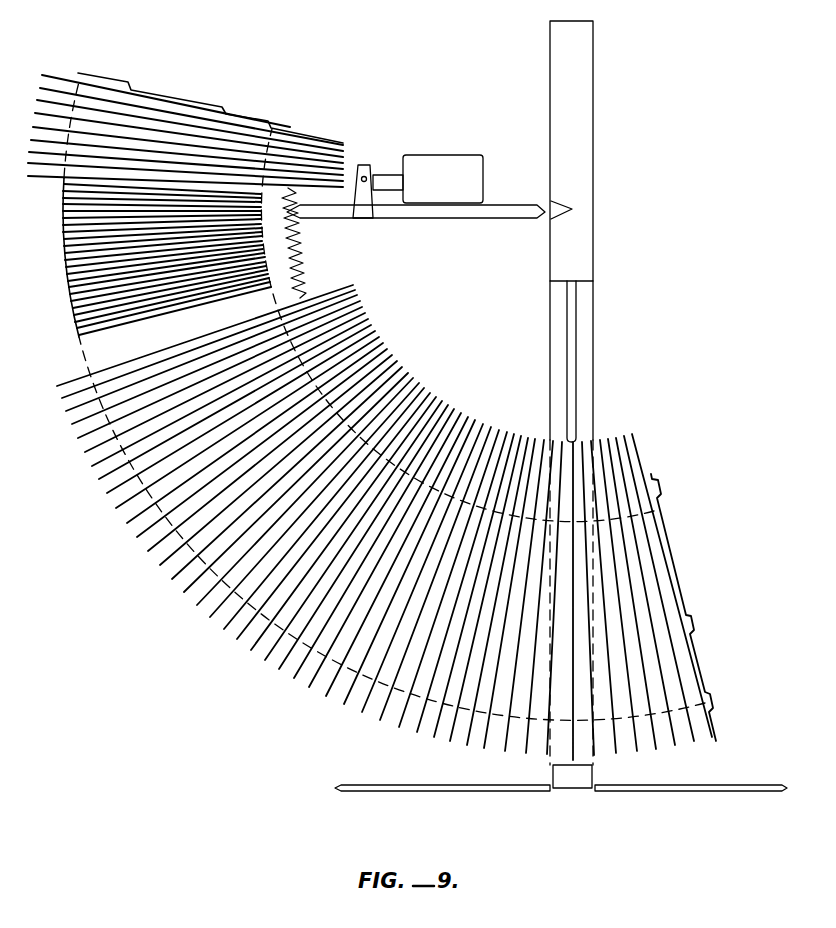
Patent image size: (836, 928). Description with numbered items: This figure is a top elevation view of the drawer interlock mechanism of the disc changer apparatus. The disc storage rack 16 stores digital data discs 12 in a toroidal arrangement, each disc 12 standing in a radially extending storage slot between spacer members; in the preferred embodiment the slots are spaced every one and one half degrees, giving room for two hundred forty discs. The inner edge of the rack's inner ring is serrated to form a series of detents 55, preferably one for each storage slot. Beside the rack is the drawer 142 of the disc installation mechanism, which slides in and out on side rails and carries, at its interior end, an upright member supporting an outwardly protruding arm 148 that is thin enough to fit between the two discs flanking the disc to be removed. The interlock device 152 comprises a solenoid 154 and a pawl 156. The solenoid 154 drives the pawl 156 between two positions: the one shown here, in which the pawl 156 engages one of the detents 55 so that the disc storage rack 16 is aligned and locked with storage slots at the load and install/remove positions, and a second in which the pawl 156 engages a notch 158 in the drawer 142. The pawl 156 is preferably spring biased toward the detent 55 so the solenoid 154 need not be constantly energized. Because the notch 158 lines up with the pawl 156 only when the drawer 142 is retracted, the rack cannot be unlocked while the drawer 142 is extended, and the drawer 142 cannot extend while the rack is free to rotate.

The disc 12 is at (352, 290).
The disc storage rack 16 is at (72, 297).
The detent 55 is at (302, 242).
The drawer 142 is at (594, 248).
The arm 148 is at (578, 372).
The interlock device 152 is at (416, 165).
The solenoid 154 is at (452, 155).
The pawl 156 is at (438, 218).
The notch 158 is at (549, 214).